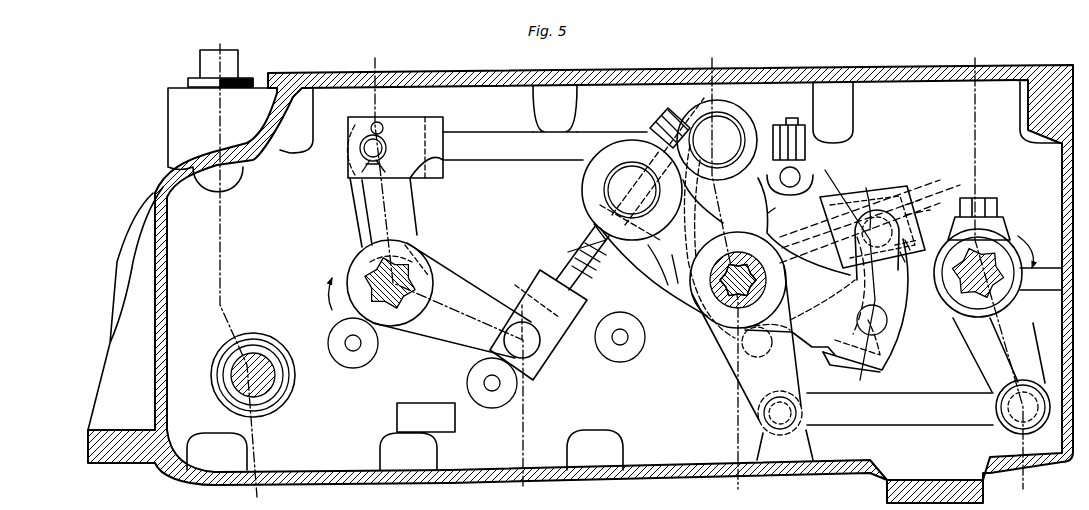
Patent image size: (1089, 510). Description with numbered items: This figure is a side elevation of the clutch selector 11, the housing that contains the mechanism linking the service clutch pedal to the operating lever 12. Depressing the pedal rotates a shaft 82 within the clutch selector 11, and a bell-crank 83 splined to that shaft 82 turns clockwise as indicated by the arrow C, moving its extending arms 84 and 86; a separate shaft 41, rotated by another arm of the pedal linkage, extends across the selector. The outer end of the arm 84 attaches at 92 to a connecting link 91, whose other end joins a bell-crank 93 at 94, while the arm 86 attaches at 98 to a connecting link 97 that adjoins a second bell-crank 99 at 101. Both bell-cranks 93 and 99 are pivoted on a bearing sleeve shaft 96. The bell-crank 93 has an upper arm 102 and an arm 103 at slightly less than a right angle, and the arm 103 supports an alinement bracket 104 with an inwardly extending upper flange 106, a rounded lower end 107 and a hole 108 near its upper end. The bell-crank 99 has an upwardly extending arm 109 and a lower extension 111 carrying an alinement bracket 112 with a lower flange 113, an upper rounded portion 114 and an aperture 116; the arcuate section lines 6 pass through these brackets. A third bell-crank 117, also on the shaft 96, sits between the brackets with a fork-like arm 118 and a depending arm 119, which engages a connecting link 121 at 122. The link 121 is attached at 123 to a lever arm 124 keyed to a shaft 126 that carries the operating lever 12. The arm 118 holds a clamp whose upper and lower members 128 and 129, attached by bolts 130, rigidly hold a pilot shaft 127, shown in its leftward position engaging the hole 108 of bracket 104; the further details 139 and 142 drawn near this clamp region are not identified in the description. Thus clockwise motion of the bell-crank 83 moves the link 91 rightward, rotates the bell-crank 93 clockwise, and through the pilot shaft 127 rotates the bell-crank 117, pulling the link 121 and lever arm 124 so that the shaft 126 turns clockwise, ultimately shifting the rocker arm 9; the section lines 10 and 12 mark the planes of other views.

The arcuate sectional view 6 is at (855, 180).
The rocker arm 9 is at (240, 41).
The section line 10 is at (395, 56).
The clutch selector 11 is at (155, 190).
The operating lever 12 is at (1000, 56).
The shaft 41 is at (283, 395).
The shaft 82 is at (372, 283).
The bell-crank 83 is at (352, 222).
The arm 84 is at (352, 196).
The arm 86 is at (462, 340).
The connecting link 91 is at (450, 121).
The attachment point 92 is at (378, 135).
The bell-crank 93 is at (790, 215).
The connection 94 is at (728, 125).
The bearing sleeve shaft 96 is at (700, 318).
The connecting link 97 is at (605, 255).
The attachment point 98 is at (540, 357).
The bell-crank 99 is at (660, 248).
The connection 101 is at (590, 192).
The upper arm 102 is at (748, 198).
The arm 103 is at (805, 218).
The alinement bracket 104 is at (902, 320).
The upper flange 106 is at (882, 192).
The rounded lower end 107 is at (895, 348).
The hole 108 is at (920, 200).
The upper arm 109 is at (665, 275).
The lower extension 111 is at (800, 330).
The alinement bracket 112 is at (905, 260).
The lower flange 113 is at (880, 364).
The upper rounded portion 114 is at (868, 198).
The aperture 116 is at (890, 300).
The bell-crank 117 is at (728, 365).
The arm 118 is at (925, 186).
The depending arm 119 is at (750, 378).
The connecting link 121 is at (955, 388).
The connection 122 is at (765, 418).
The attachment point 123 is at (1003, 428).
The lever arm 124 is at (977, 360).
The shaft 126 is at (1008, 240).
The pilot shaft 127 is at (855, 260).
The upper member 128 is at (735, 230).
The lower member 129 is at (805, 304).
The bolts 130 is at (868, 185).
The slot 139 is at (918, 220).
The edge 142 is at (912, 235).
The arrow C is at (322, 292).